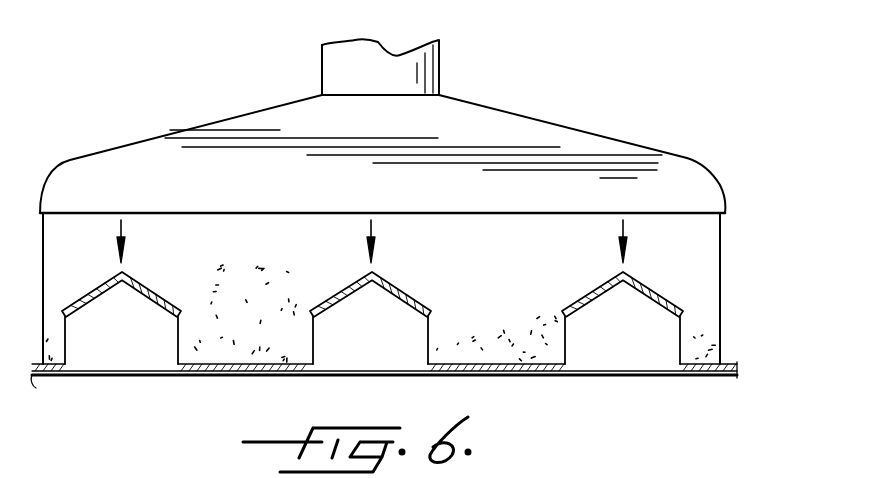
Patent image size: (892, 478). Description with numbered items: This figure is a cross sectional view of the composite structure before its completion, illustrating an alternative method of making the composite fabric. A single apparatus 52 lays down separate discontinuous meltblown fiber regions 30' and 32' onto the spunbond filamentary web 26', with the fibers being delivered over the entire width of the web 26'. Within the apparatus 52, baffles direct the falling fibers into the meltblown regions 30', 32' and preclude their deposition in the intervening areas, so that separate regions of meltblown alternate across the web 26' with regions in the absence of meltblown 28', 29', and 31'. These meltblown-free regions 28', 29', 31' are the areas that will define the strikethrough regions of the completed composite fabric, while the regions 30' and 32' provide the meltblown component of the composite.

The apparatus 52 is at (603, 137).
The spunbond filamentary web 26' is at (390, 401).
The region in the absence of meltblown 28' is at (618, 395).
The region in the absence of meltblown 29' is at (344, 388).
The region in the absence of meltblown 31' is at (116, 401).
The discontinuous fiber meltblown region 30' is at (245, 320).
The discontinuous fiber meltblown region 32' is at (497, 318).